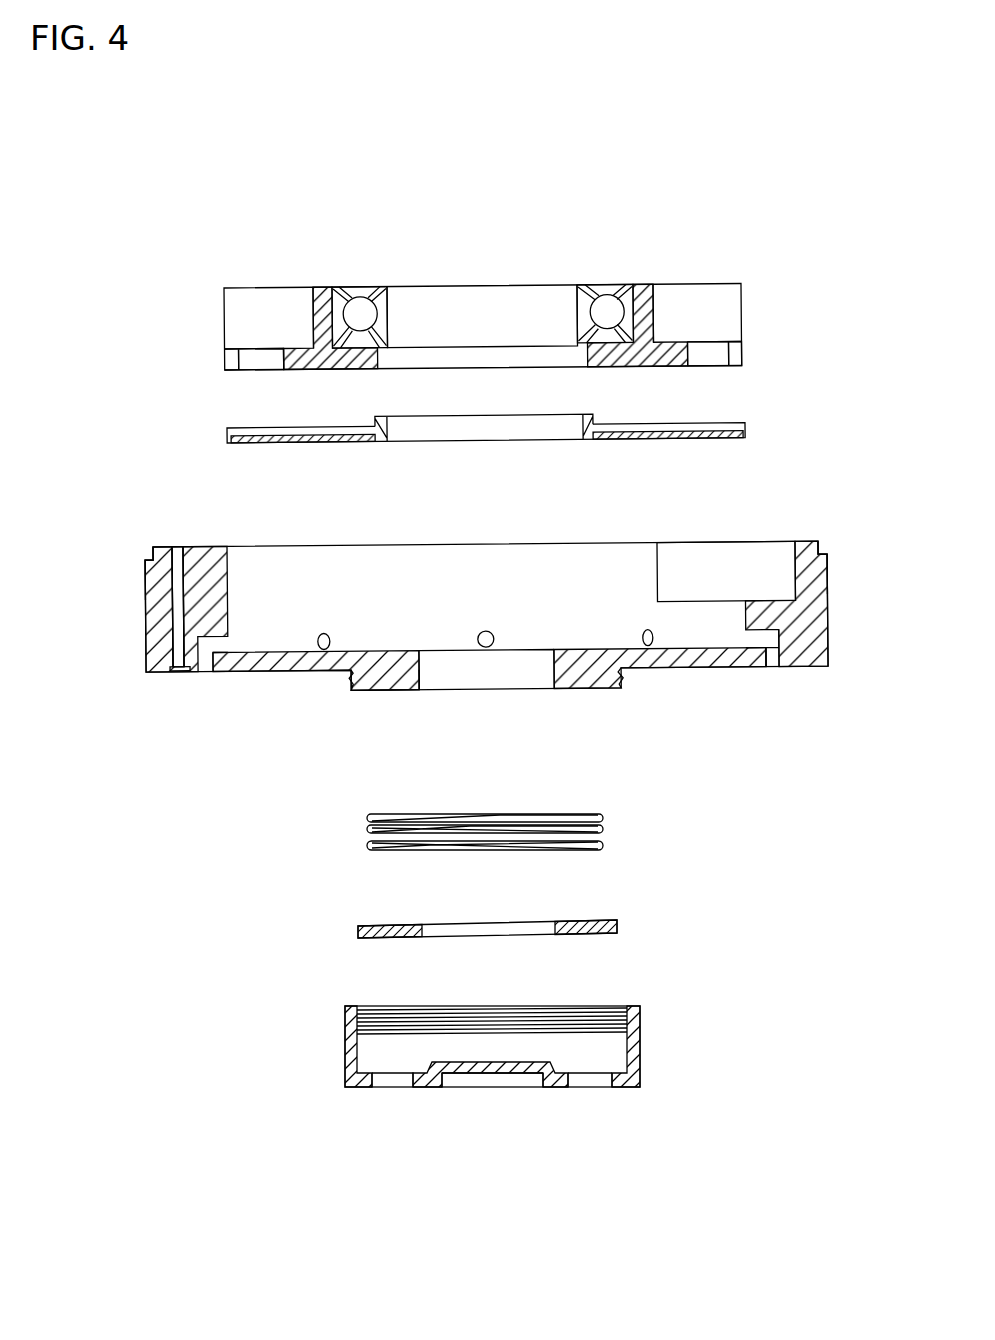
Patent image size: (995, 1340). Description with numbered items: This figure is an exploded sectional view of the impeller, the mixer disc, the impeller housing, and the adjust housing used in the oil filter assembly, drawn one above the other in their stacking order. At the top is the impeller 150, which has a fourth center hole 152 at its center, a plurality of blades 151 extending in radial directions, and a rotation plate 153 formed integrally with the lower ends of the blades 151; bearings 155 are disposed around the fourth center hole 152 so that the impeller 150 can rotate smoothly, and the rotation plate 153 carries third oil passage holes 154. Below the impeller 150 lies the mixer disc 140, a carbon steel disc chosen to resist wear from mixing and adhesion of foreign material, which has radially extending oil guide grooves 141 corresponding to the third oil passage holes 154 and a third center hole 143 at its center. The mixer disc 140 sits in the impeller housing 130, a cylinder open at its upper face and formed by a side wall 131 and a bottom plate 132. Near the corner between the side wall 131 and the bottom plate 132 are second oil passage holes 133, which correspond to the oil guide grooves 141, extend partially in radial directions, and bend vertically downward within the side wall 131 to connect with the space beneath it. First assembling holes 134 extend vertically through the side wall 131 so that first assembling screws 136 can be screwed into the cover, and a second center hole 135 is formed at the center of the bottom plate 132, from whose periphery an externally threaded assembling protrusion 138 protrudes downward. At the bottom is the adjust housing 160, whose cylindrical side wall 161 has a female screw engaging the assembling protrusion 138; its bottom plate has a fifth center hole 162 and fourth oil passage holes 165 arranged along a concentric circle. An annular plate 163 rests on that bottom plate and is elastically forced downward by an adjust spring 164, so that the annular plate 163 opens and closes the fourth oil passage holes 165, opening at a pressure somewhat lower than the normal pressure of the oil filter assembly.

The impeller housing 130 is at (480, 618).
The side wall 131 is at (147, 567).
The bottom plate 132 is at (295, 663).
The second oil passage holes 133 is at (493, 635).
The first assembling holes 134 is at (173, 580).
The second center hole 135 is at (487, 680).
The first assembling screws 136 is at (177, 625).
The assembling protrusion 138 is at (382, 693).
The mixer disc 140 is at (471, 444).
The oil guide grooves 141 is at (727, 423).
The third center hole 143 is at (440, 437).
The impeller 150 is at (476, 308).
The blades 151 is at (233, 300).
The fourth center hole 152 is at (492, 352).
The rotation plate 153 is at (292, 345).
The third oil passage holes 154 is at (252, 365).
The bearings 155 is at (370, 307).
The adjust housing 160 is at (474, 1089).
The side wall 161 is at (632, 1037).
The fifth center hole 162 is at (478, 1083).
The annular plate 163 is at (607, 922).
The adjust spring 164 is at (597, 813).
The fourth oil passage holes 165 is at (388, 1083).